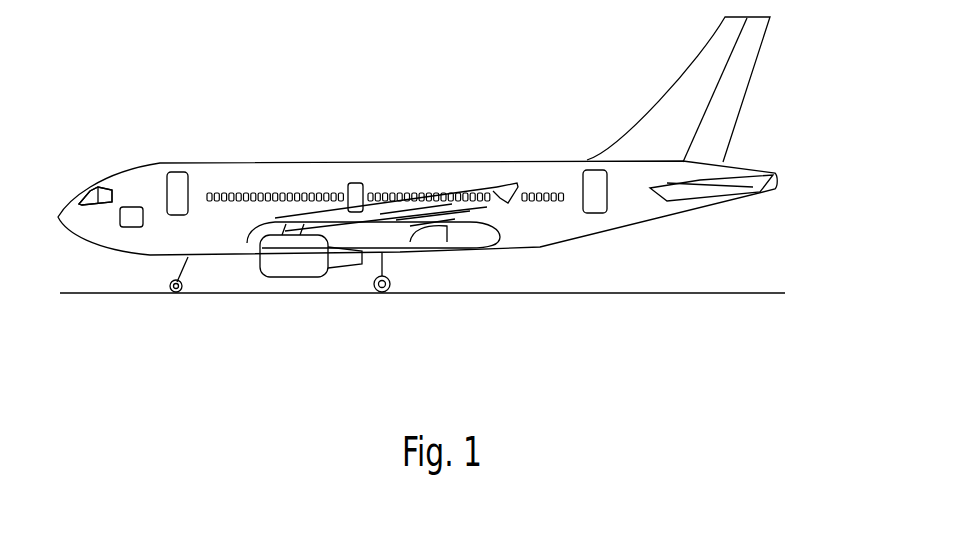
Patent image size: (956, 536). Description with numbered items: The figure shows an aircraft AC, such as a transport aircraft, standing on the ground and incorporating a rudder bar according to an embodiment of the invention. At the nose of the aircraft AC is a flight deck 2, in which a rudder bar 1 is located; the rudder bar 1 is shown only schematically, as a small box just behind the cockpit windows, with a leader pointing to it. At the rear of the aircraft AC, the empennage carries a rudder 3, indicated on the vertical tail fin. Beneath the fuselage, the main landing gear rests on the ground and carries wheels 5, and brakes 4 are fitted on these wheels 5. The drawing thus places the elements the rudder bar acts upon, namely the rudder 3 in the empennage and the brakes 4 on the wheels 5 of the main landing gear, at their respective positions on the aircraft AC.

The rudder bar 1 is at (133, 202).
The flight deck 2 is at (123, 193).
The rudder 3 is at (728, 102).
The brakes 4 is at (370, 291).
The wheels 5 is at (395, 297).
The aircraft AC is at (573, 240).